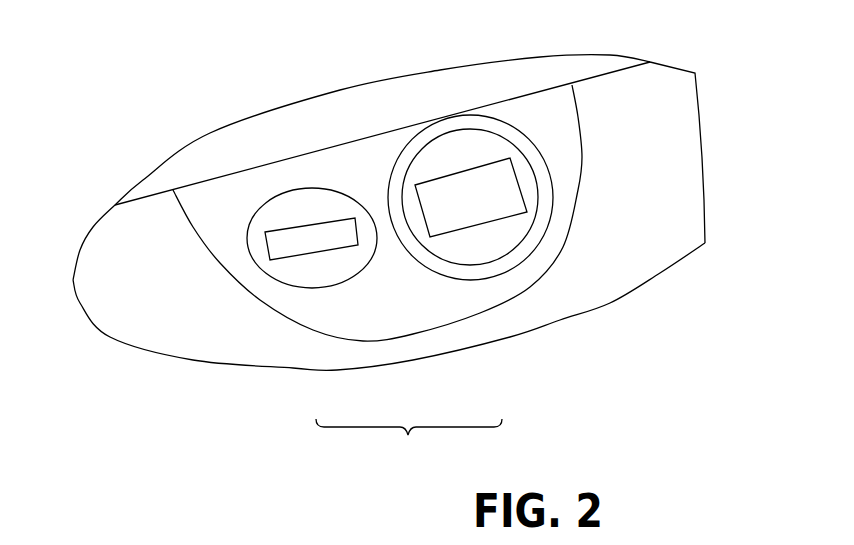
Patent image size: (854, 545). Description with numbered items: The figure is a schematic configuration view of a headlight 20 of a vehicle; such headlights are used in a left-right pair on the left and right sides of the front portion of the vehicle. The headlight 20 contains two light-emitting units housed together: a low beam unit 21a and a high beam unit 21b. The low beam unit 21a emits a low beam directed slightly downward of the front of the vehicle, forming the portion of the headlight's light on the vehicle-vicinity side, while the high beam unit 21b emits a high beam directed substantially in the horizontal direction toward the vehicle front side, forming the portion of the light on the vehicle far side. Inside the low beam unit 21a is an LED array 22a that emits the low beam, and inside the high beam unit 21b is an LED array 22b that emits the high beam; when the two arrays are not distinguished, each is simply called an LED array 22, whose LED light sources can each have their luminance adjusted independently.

The headlight 20 is at (142, 92).
The low beam unit 21a is at (527, 135).
The high beam unit 21b is at (342, 190).
The LED array 22 is at (409, 442).
The LED array 22a is at (458, 232).
The LED array 22b is at (313, 253).